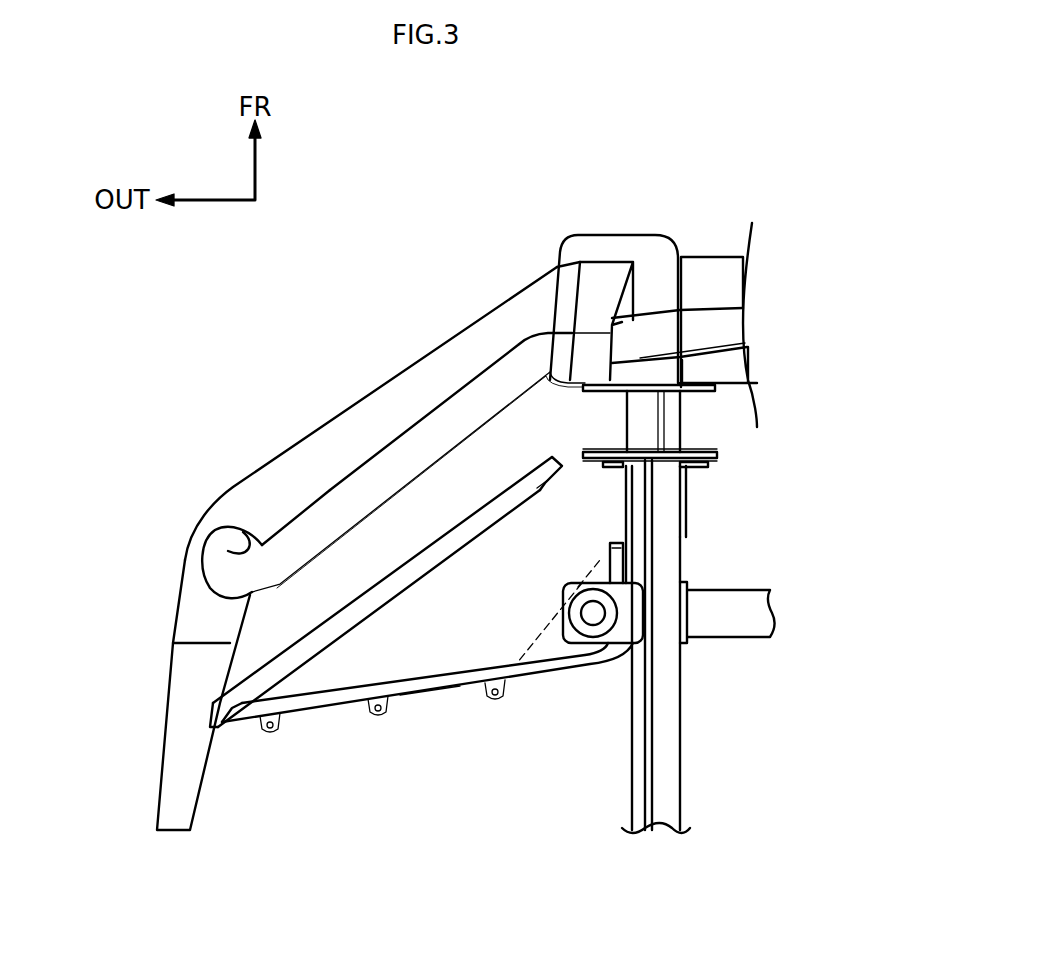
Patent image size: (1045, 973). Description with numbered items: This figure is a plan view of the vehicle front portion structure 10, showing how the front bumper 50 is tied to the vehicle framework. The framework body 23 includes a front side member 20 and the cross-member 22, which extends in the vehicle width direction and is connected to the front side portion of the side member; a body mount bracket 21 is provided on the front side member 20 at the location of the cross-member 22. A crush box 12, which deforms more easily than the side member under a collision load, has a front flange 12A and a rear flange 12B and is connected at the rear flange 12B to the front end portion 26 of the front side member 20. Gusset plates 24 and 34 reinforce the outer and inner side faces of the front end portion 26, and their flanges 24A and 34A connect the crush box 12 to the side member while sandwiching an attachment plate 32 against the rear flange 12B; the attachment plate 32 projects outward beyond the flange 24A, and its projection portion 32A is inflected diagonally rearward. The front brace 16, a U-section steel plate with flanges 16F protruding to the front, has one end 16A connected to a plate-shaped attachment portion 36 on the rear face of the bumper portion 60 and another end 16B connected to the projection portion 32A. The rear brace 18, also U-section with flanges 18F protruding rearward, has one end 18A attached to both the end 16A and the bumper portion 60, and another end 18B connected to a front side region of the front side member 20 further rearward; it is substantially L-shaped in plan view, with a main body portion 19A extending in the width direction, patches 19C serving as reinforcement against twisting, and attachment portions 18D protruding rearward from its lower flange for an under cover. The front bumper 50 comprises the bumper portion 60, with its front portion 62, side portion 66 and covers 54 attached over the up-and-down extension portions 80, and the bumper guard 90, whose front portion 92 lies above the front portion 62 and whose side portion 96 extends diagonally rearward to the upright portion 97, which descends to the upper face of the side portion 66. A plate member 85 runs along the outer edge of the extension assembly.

The vehicle front structure 10 is at (96, 296).
The crush box 12 is at (682, 418).
The front flange 12A is at (607, 392).
The rear flange 12B is at (607, 450).
The front brace 16 is at (358, 592).
The one end of the front brace 16A is at (232, 712).
The another end of the front brace 16B is at (517, 466).
The flange 16F is at (312, 627).
The rear brace 18 is at (417, 680).
The one end of the rear brace 18A is at (232, 745).
The another end of the rear brace 18B is at (612, 545).
The attachment portions 18D is at (270, 735).
The flange 18F is at (430, 697).
The main body portion 19A is at (620, 565).
The patches 19C is at (537, 653).
The front side member 20 is at (682, 730).
The body mount bracket 21 is at (563, 593).
The cross-member 22 is at (722, 637).
The framework body 23 is at (630, 770).
The gusset plate 24 is at (625, 515).
The flange 24A is at (612, 470).
The front end portion 26 is at (663, 470).
The attachment plate 32 is at (722, 456).
The projection portion 32A is at (537, 488).
The gusset plate 34 is at (685, 517).
The flange 34A is at (700, 470).
The attachment portion 36 is at (215, 710).
The front bumper 50 is at (400, 240).
The cover 54 is at (588, 237).
The bumper portion 60 is at (492, 307).
The front portion 62 is at (724, 258).
The side portion 66 is at (332, 421).
The up-and-down extension portion 80 is at (572, 298).
The plate member 85 is at (608, 265).
The bumper guard 90 is at (493, 360).
The front portion 92 is at (700, 310).
The side portion 96 is at (312, 506).
The upright portion 97 is at (205, 527).